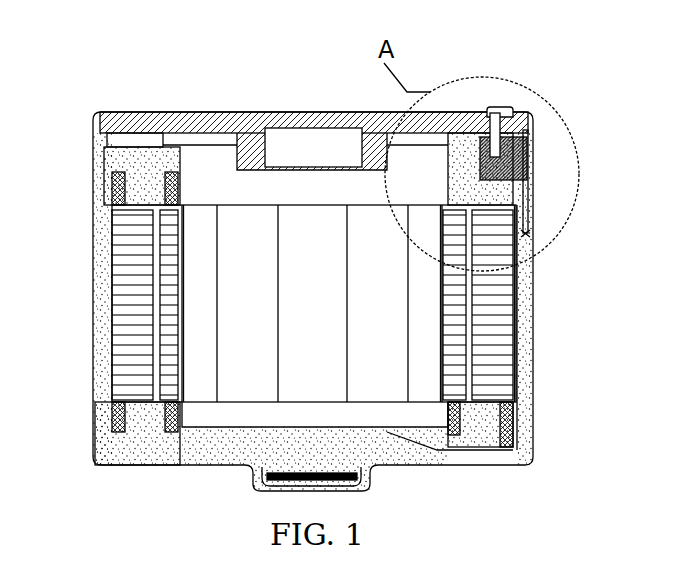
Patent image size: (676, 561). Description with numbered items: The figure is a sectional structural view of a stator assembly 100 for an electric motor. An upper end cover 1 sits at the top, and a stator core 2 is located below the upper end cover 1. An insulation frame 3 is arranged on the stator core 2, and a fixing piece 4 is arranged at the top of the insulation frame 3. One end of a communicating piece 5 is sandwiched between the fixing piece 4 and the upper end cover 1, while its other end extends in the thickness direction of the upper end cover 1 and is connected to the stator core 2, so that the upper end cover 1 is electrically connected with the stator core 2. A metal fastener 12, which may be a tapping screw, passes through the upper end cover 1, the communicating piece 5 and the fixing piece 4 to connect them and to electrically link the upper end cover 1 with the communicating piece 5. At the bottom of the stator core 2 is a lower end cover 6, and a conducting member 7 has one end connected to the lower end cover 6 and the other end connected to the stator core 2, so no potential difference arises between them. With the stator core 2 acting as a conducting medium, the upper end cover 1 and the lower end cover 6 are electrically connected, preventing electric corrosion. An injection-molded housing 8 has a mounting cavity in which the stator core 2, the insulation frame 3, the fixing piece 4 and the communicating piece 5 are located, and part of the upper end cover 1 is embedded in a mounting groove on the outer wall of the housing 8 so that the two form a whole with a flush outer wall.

The stator assembly 100 is at (107, 67).
The upper end cover 1 is at (237, 110).
The stator core 2 is at (92, 290).
The insulation frame 3 is at (490, 195).
The fixing piece 4 is at (528, 140).
The communicating piece 5 is at (537, 231).
The lower end cover 6 is at (378, 478).
The conducting member 7 is at (535, 457).
The housing 8 is at (530, 290).
The fastener 12 is at (493, 112).